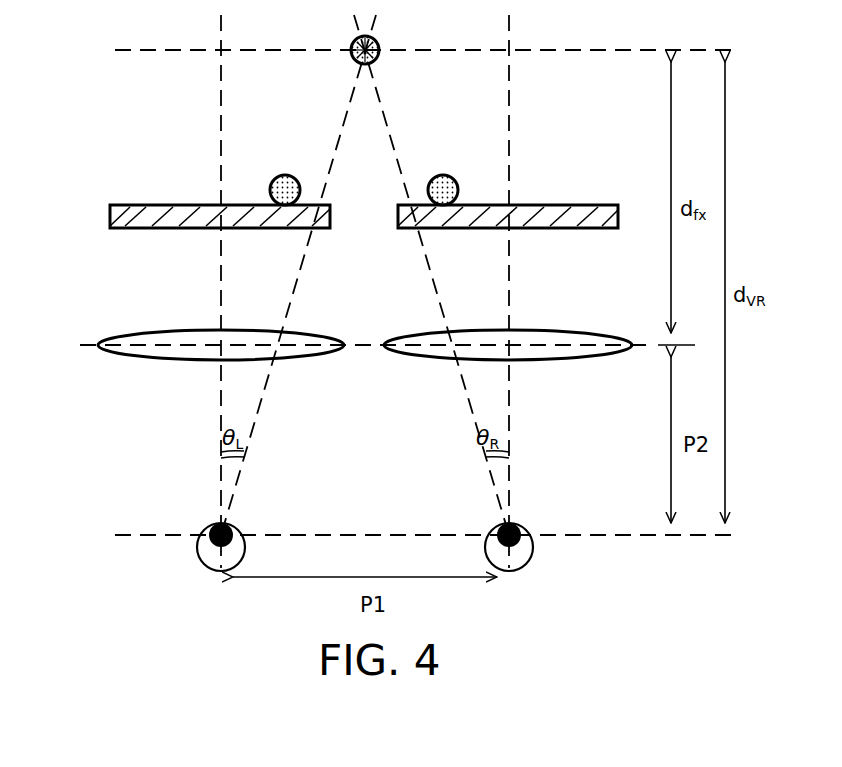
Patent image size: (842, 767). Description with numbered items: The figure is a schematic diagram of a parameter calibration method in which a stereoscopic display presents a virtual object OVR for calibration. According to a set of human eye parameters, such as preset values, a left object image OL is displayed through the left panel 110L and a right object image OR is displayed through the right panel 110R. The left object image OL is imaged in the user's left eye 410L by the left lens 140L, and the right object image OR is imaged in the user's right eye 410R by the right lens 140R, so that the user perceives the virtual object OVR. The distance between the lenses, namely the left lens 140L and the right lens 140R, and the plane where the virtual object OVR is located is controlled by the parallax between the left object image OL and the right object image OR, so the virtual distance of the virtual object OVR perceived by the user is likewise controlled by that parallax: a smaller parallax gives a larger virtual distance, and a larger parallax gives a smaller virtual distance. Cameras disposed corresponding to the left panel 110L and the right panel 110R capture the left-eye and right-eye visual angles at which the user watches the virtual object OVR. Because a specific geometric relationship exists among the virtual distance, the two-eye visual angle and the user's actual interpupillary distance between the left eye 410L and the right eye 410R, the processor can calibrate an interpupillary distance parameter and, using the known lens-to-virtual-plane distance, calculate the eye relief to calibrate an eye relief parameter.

The left panel 110L is at (110, 212).
The right panel 110R is at (608, 204).
The left lens 140L is at (140, 362).
The right lens 140R is at (595, 362).
The left eye 410L is at (200, 557).
The right eye 410R is at (532, 557).
The left object image OL is at (287, 174).
The right object image OR is at (445, 174).
The virtual object OVR is at (376, 41).